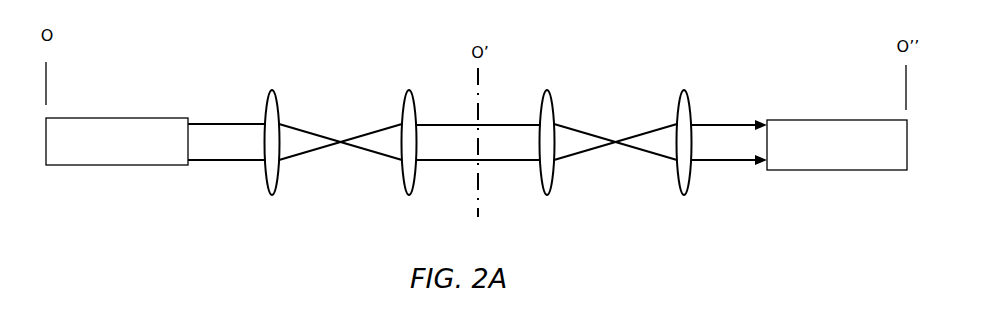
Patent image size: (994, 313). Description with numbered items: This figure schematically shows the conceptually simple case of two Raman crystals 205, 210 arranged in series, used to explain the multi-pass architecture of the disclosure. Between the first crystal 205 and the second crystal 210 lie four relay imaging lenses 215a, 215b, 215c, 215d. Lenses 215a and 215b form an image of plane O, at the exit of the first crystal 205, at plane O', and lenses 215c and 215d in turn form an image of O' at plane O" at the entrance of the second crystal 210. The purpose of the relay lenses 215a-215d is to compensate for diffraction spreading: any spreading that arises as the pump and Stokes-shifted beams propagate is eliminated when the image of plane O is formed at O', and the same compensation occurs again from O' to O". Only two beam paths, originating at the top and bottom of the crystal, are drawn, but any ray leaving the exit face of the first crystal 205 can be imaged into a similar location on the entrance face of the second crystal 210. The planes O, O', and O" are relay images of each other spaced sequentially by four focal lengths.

The Raman crystal 205 is at (100, 153).
The Raman crystal 210 is at (821, 157).
The lens 215a is at (266, 104).
The lens 215b is at (404, 102).
The lens 215c is at (553, 102).
The lens 215d is at (690, 102).